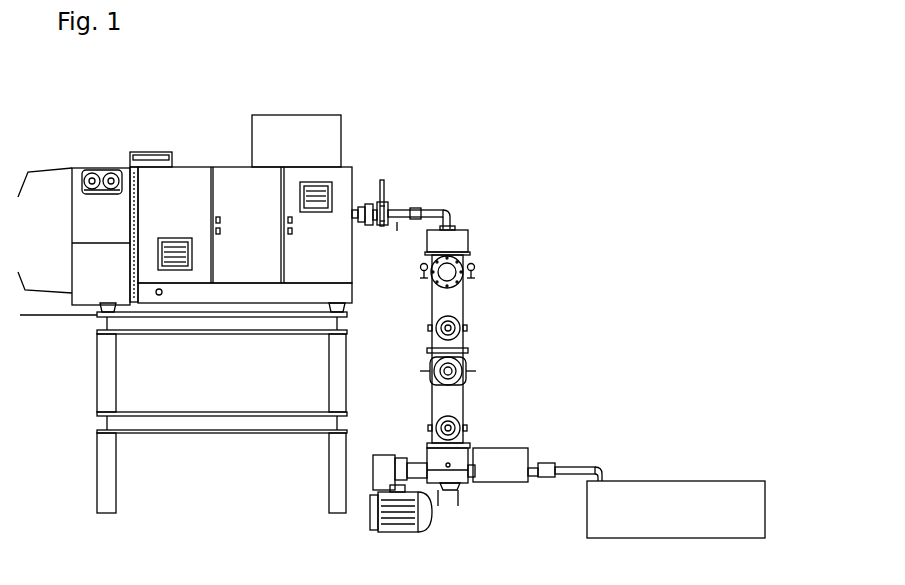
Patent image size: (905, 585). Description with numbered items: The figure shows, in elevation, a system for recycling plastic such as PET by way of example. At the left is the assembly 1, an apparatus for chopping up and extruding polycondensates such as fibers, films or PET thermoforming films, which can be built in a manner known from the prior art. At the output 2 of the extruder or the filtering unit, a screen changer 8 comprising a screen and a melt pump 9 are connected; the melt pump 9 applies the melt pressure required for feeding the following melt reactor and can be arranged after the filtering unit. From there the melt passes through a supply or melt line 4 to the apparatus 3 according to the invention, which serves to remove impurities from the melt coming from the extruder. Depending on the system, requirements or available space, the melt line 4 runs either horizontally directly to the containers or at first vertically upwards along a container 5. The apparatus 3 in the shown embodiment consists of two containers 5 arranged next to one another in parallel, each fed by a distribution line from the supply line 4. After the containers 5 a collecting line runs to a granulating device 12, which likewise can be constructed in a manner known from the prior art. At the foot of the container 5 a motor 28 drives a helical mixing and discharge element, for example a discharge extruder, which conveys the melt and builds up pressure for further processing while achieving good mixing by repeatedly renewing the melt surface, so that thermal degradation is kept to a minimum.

The assembly 1 is at (221, 136).
The output 2 is at (356, 204).
The apparatus 3 is at (509, 242).
The supply or melt line 4 is at (428, 218).
The container 5 is at (453, 300).
The screen changer 8 is at (389, 197).
The melt pump 9 is at (419, 204).
The granulating device 12 is at (670, 498).
The motor 28 is at (400, 513).